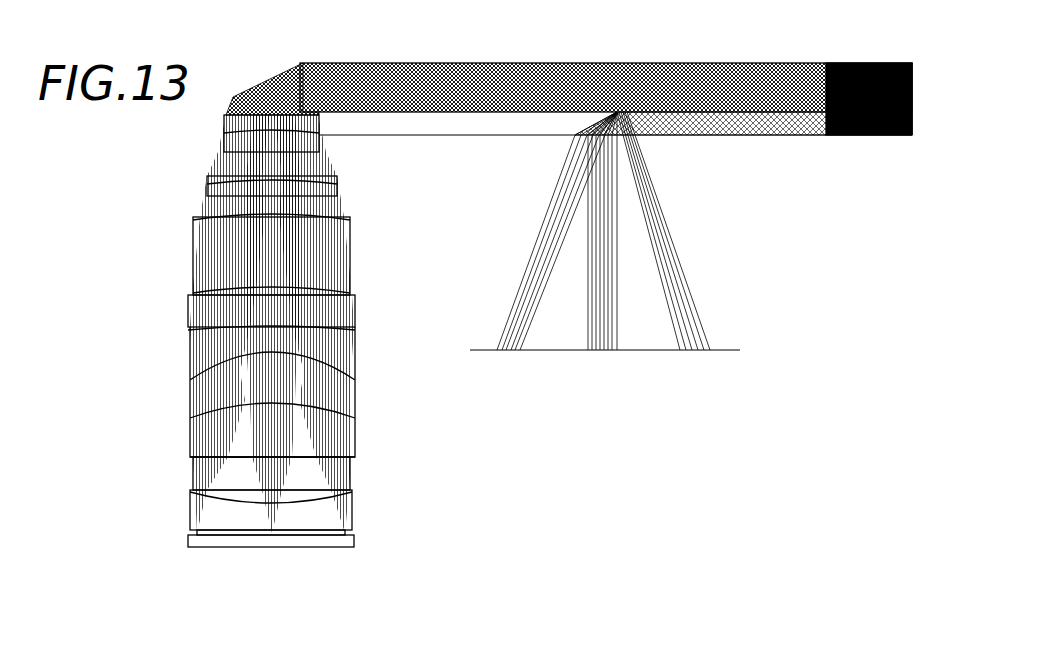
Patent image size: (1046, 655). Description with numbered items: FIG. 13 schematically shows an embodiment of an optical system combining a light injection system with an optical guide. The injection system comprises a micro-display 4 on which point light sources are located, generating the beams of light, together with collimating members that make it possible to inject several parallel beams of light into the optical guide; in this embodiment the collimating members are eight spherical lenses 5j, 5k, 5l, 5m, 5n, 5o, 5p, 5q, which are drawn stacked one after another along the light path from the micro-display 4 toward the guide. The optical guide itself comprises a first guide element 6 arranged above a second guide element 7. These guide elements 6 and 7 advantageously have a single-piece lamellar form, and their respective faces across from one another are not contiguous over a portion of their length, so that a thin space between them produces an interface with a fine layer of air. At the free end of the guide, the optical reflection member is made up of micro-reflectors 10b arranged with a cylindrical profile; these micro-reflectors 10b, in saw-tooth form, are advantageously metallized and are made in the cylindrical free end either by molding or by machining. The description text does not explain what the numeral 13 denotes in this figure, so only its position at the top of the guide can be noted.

The micro-display 4 is at (296, 547).
The spherical lens 5j is at (352, 492).
The spherical lens 5k is at (193, 452).
The spherical lens 5l is at (352, 410).
The spherical lens 5m is at (190, 361).
The spherical lens 5n is at (355, 305).
The spherical lens 5o is at (193, 232).
The spherical lens 5p is at (337, 186).
The spherical lens 5q is at (224, 128).
The first guide element 6 is at (670, 60).
The second guide element 7 is at (765, 140).
The micro-reflectors 10b is at (913, 125).
The light guide 13 is at (895, 60).